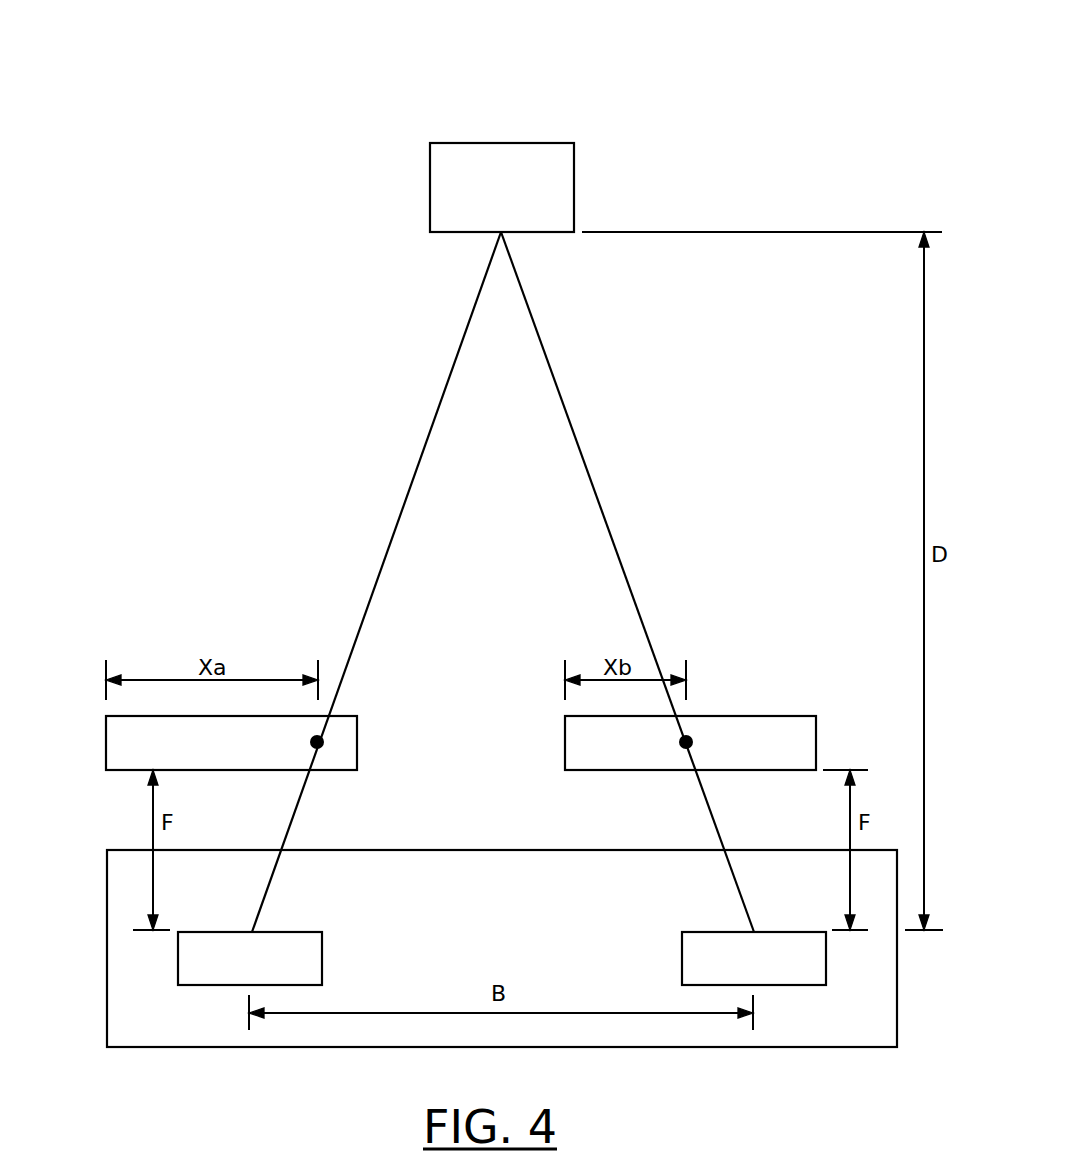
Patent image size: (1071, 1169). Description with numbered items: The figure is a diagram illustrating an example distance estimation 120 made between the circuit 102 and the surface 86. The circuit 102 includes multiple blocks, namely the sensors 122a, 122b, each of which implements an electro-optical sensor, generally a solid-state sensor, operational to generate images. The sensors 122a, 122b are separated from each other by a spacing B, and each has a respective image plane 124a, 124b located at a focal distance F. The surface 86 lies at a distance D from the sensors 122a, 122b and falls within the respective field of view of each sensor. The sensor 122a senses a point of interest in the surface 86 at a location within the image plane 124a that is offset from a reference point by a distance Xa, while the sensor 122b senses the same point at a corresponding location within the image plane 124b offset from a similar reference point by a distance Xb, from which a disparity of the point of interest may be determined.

The distance estimation 120 is at (396, 42).
The surface 86 is at (470, 142).
The circuit 102 is at (107, 882).
The sensor 122a is at (216, 986).
The sensor 122b is at (712, 931).
The image plane 124a is at (106, 735).
The image plane 124b is at (565, 735).